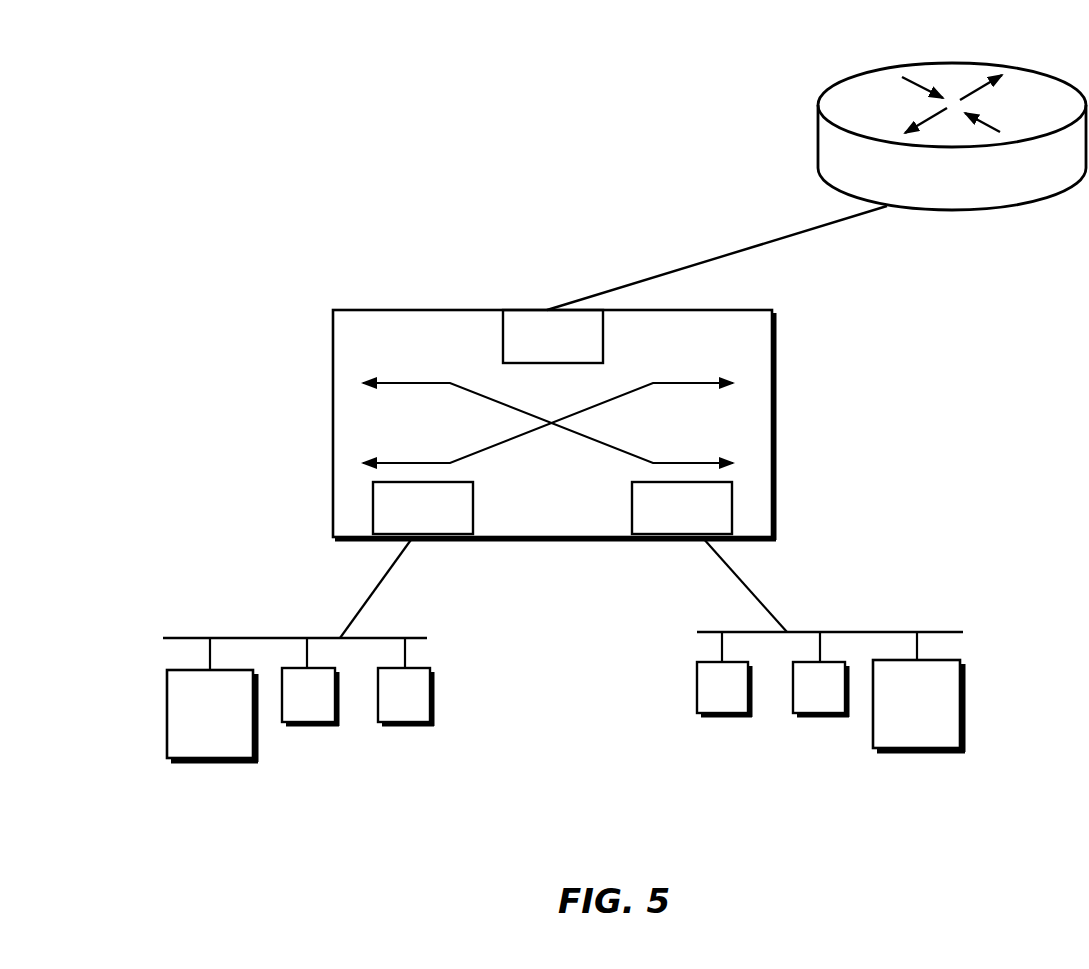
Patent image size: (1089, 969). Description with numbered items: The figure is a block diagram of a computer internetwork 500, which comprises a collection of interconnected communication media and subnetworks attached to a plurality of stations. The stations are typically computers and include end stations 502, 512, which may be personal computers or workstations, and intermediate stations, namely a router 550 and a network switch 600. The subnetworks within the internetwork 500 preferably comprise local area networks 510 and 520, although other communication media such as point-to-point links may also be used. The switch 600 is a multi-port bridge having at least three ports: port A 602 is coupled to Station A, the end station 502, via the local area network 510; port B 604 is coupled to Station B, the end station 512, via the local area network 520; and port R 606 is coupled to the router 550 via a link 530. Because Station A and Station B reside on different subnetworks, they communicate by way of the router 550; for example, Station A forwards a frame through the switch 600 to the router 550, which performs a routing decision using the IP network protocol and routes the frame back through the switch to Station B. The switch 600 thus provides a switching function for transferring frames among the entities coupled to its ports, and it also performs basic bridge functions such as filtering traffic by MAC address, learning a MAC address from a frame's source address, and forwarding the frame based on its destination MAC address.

The computer internetwork 500 is at (226, 146).
The router 550 is at (1012, 67).
The link 530 is at (716, 257).
The network switch 600 is at (774, 337).
The port R 606 is at (517, 310).
The port A 602 is at (434, 541).
The port B 604 is at (656, 540).
The local area network 510 is at (243, 636).
The local area network 520 is at (882, 630).
The end station 502 is at (200, 765).
The end station 512 is at (935, 756).